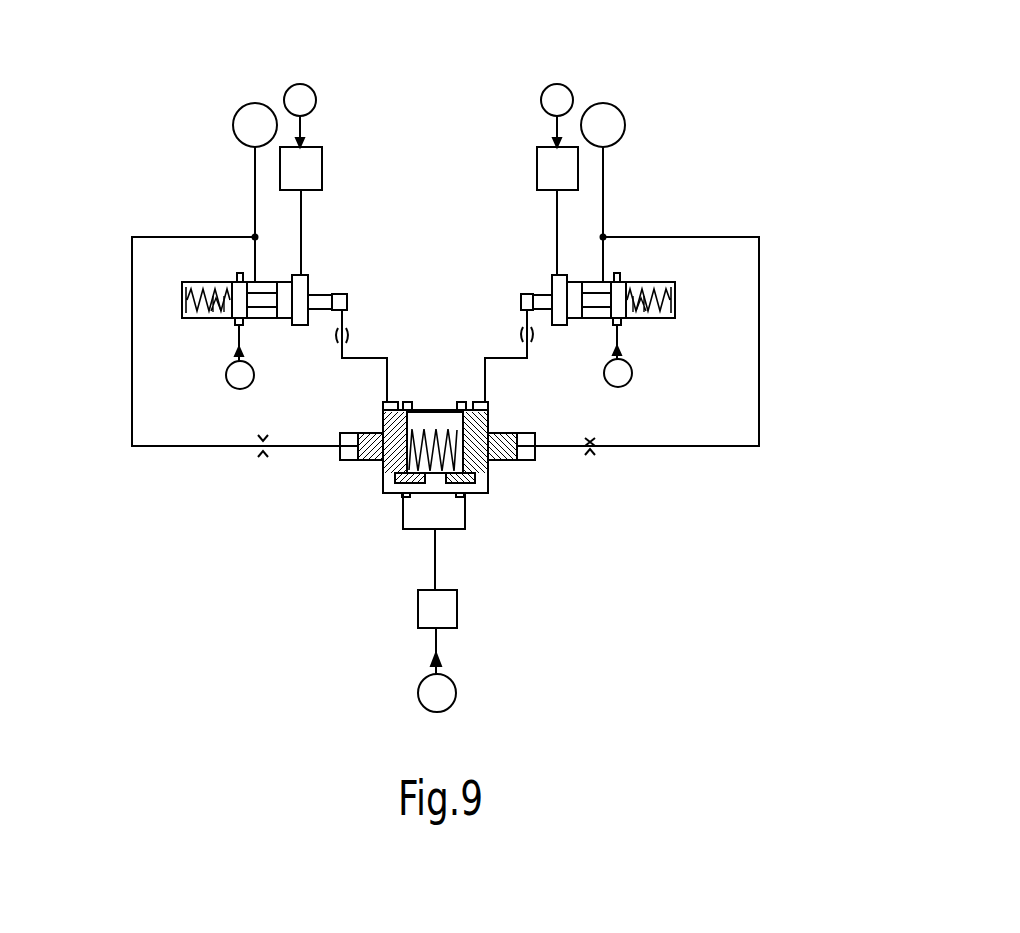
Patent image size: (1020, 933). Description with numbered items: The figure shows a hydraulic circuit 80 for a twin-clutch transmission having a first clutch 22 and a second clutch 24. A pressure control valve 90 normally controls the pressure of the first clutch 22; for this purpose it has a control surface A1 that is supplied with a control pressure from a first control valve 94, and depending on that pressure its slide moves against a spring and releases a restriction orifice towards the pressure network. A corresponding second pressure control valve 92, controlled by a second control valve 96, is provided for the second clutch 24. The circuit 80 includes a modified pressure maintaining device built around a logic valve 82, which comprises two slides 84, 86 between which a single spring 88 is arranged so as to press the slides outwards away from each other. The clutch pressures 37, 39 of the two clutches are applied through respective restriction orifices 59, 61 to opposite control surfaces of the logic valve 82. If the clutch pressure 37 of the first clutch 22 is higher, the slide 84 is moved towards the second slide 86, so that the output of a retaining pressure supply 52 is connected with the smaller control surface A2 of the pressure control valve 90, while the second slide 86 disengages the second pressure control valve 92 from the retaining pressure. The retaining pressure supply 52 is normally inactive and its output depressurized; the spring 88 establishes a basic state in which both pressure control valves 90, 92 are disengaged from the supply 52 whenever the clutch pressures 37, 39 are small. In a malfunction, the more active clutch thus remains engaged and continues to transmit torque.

The hydraulic circuit 80 is at (462, 389).
The first clutch 22 is at (241, 107).
The second clutch 24 is at (626, 127).
The first control valve 94 is at (322, 173).
The second control valve 96 is at (537, 172).
The pressure control valve 90 is at (188, 282).
The second pressure control valve 92 is at (665, 282).
The control surface A1 is at (298, 325).
The control surface A2 is at (347, 300).
The clutch pressure 37 is at (132, 357).
The clutch pressure 39 is at (759, 375).
The restriction orifice 59 is at (265, 456).
The restriction orifice 61 is at (590, 457).
The logic valve 82 is at (462, 529).
The slide 84 is at (373, 463).
The second slide 86 is at (515, 462).
The spring 88 is at (437, 427).
The retaining pressure supply 52 is at (417, 610).